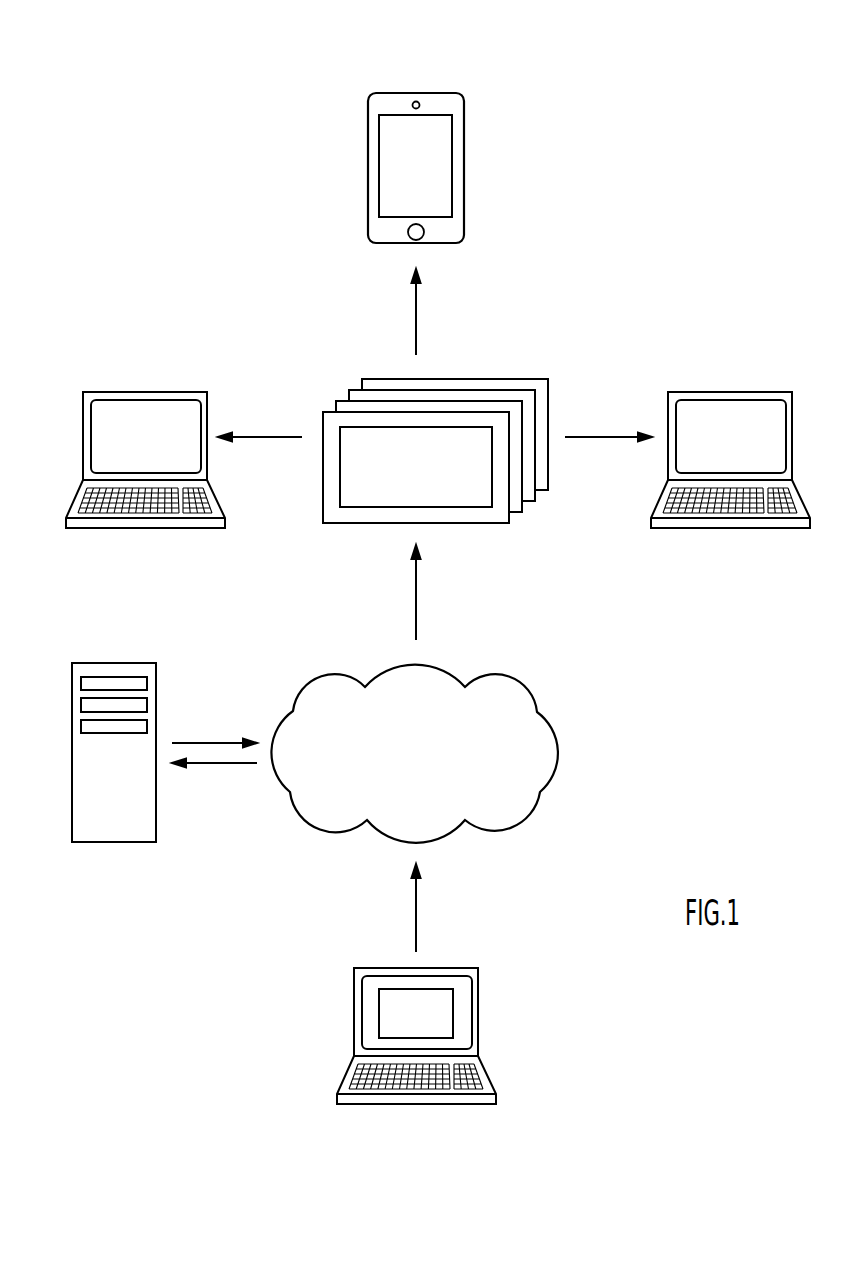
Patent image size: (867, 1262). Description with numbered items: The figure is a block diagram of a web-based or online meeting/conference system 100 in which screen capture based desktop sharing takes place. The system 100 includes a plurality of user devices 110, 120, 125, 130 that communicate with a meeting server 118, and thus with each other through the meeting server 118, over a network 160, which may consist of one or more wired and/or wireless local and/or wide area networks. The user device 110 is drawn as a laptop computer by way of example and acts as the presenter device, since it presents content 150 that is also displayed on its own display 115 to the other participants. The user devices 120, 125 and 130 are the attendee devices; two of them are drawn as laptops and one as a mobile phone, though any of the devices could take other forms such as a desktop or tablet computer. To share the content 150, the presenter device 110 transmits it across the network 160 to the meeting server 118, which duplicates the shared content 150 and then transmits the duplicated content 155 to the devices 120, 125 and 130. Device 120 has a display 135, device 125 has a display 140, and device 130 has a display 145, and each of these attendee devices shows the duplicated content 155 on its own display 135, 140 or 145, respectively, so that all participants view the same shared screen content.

The conference system 100 is at (676, 218).
The user device 110 is at (454, 952).
The display 115 is at (462, 997).
The meeting server 118 is at (156, 688).
The user device 120 is at (152, 374).
The user device 125 is at (736, 374).
The user device 130 is at (444, 64).
The display 135 is at (188, 420).
The display 140 is at (773, 420).
The display 145 is at (429, 153).
The content 150 is at (390, 1012).
The duplicated content 155 is at (540, 342).
The network 160 is at (403, 764).